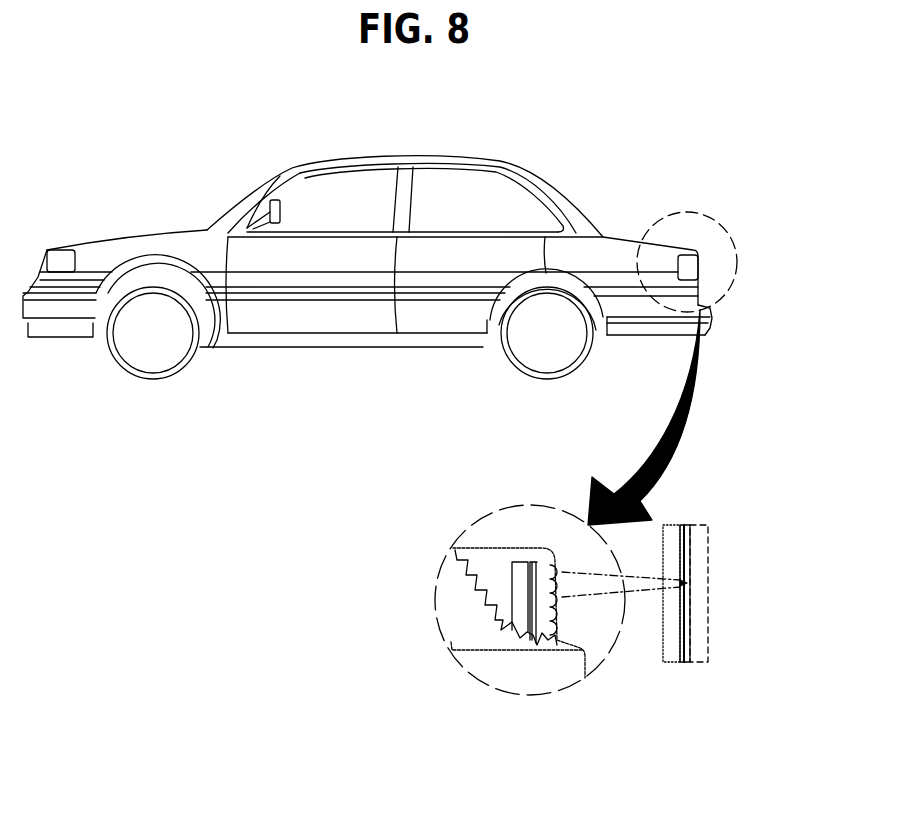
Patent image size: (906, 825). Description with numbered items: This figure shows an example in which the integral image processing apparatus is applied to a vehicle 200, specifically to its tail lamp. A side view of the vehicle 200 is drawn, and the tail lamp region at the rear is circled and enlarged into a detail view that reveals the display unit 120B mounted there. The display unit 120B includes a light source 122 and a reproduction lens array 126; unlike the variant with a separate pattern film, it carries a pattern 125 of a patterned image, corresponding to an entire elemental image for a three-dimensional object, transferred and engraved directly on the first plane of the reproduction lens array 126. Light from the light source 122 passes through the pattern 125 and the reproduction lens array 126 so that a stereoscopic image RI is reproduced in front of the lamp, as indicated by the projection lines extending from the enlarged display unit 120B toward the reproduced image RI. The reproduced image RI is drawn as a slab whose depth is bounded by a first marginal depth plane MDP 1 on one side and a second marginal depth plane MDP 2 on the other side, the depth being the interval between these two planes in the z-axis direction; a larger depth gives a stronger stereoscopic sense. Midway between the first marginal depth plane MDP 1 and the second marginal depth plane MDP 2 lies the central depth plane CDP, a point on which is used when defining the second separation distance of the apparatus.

The vehicle 200 is at (762, 115).
The display unit 120B is at (510, 458).
The light source 122 is at (520, 564).
The pattern 125 is at (532, 564).
The reproduction lens array 126 is at (545, 567).
The reproduced stereoscopic image RI is at (707, 524).
The first marginal depth plane MDP 1 is at (663, 650).
The central depth plane CDP is at (687, 663).
The second marginal depth plane MDP 2 is at (708, 650).